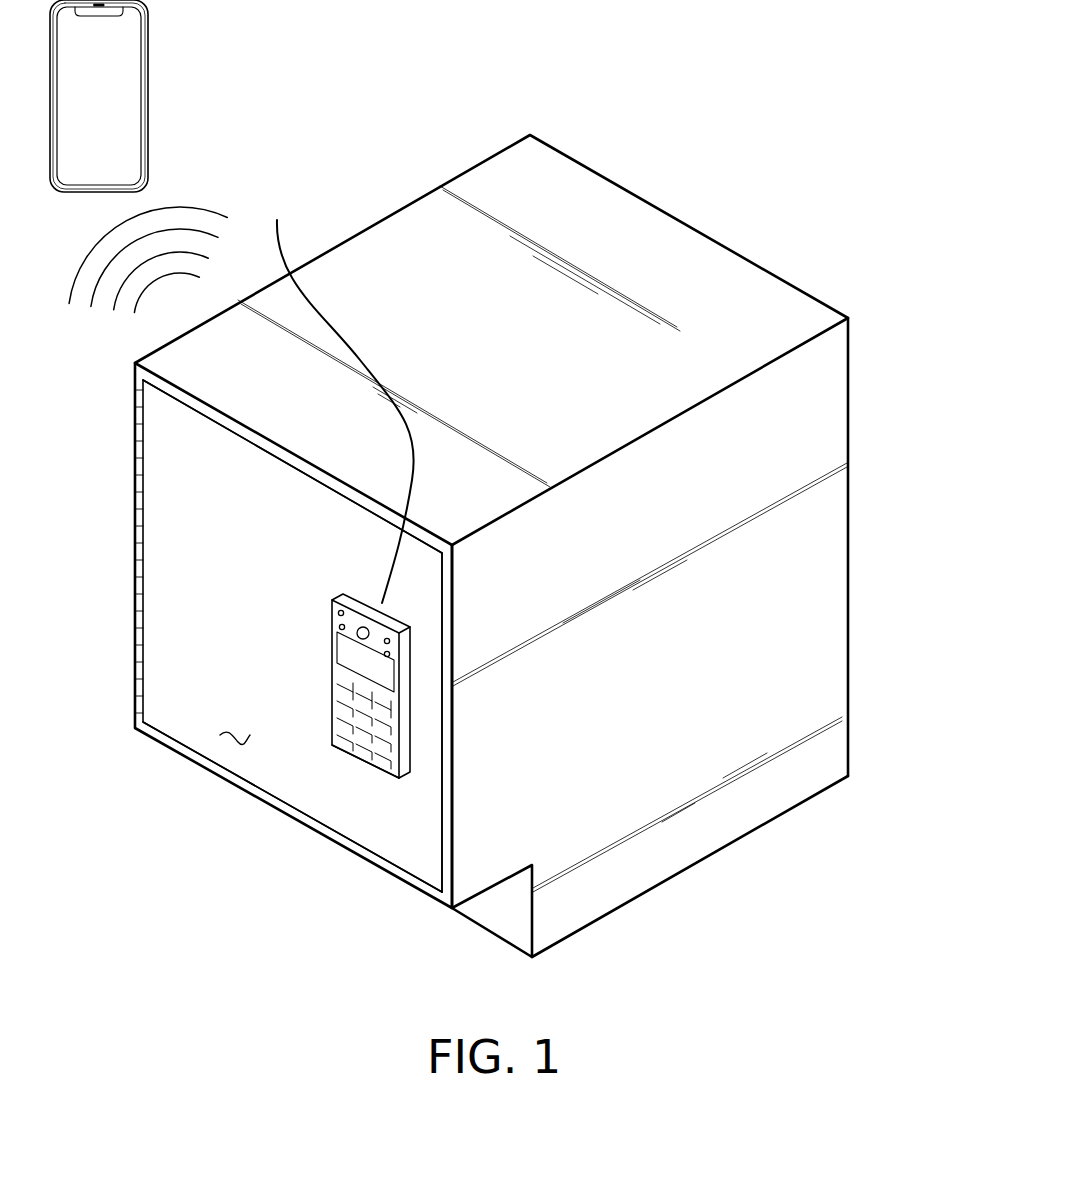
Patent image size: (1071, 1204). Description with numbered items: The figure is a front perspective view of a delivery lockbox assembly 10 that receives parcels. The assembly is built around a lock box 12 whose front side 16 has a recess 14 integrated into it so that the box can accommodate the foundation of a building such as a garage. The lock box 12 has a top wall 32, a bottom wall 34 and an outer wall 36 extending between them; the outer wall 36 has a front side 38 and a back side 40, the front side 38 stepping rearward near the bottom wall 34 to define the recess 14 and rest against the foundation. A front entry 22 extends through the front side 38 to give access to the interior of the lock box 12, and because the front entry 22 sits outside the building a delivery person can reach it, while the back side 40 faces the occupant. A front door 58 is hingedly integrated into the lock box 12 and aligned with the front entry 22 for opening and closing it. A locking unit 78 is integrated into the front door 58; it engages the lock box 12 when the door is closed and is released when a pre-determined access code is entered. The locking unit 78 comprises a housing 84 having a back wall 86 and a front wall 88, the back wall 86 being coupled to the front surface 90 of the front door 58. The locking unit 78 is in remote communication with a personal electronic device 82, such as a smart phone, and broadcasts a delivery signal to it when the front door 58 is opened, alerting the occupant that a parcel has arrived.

The delivery lockbox assembly 10 is at (568, 100).
The lock box 12 is at (530, 134).
The recess 14 is at (512, 920).
The front side 16 is at (453, 846).
The front entry 22 is at (440, 783).
The top wall 32 is at (375, 247).
The bottom wall 34 is at (687, 866).
The outer wall 36 is at (822, 568).
The front side 38 is at (221, 420).
The back side 40 is at (849, 390).
The front door 58 is at (273, 767).
The locking unit 78 is at (318, 680).
The personal electronic device 82 is at (148, 93).
The housing 84 is at (340, 597).
The back wall 86 is at (338, 391).
The front wall 88 is at (343, 738).
The front surface 90 is at (200, 738).